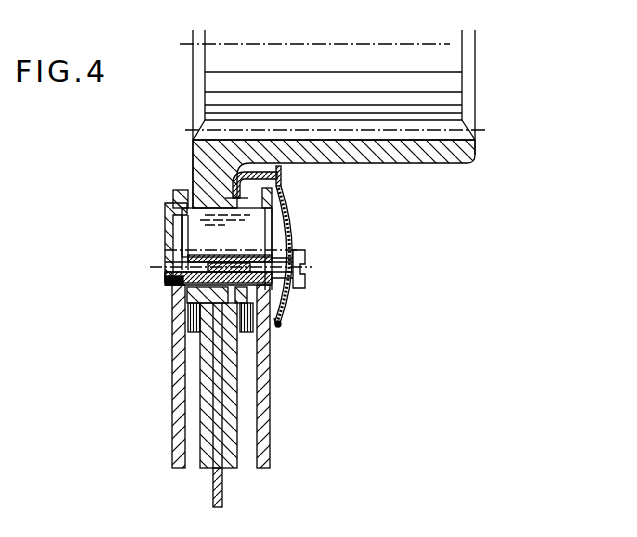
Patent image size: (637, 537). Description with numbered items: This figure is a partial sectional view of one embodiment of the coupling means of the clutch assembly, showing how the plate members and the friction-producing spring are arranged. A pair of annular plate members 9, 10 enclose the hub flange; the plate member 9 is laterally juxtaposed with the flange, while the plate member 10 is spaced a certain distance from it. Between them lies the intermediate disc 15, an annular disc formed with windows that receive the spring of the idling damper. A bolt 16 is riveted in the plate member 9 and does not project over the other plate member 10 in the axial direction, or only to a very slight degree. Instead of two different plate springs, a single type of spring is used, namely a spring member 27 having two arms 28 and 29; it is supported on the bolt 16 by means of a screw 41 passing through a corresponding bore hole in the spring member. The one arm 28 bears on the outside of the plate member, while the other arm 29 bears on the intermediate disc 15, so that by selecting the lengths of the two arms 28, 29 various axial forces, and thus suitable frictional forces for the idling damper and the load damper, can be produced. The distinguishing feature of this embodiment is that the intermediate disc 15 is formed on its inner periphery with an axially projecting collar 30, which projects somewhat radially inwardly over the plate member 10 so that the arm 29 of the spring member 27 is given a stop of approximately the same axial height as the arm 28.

The plate member 9 is at (180, 410).
The plate member 10 is at (272, 406).
The intermediate disc 15 is at (220, 180).
The bolt 16 is at (215, 236).
The spring member 27 is at (295, 236).
The arm 28 is at (282, 312).
The arm 29 is at (282, 170).
The axially projecting collar 30 is at (279, 182).
The screw 41 is at (306, 283).